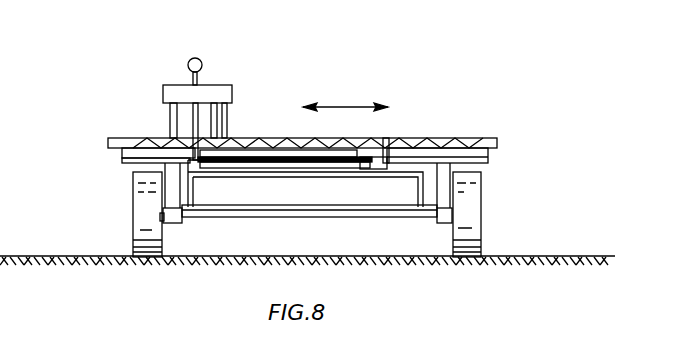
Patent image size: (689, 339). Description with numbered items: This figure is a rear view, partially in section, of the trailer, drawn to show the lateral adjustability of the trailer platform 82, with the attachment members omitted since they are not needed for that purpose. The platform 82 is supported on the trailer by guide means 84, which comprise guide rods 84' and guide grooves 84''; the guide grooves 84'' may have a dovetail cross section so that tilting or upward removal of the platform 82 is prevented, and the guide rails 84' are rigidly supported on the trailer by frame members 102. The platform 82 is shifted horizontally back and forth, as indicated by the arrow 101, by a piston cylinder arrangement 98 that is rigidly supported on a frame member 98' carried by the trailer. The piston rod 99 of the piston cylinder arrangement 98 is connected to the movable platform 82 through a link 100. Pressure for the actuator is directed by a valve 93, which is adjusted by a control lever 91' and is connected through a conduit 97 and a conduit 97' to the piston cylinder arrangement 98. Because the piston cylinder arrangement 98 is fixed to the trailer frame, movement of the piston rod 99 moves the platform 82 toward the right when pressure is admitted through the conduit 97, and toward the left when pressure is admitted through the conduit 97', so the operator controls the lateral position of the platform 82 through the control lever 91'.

The platform 82 is at (474, 140).
The guide means 84 is at (372, 187).
The guide rods 84' is at (303, 210).
The guide grooves 84'' is at (308, 149).
The control lever 91' is at (185, 56).
The valve 93 is at (170, 90).
The conduit 97 is at (224, 120).
The conduit 97' is at (151, 131).
The piston cylinder arrangement 98 is at (278, 177).
The frame member 98' is at (285, 180).
The piston rod 99 is at (377, 169).
The link 100 is at (390, 146).
The arrow 101 is at (343, 104).
The frame members 102 is at (178, 221).